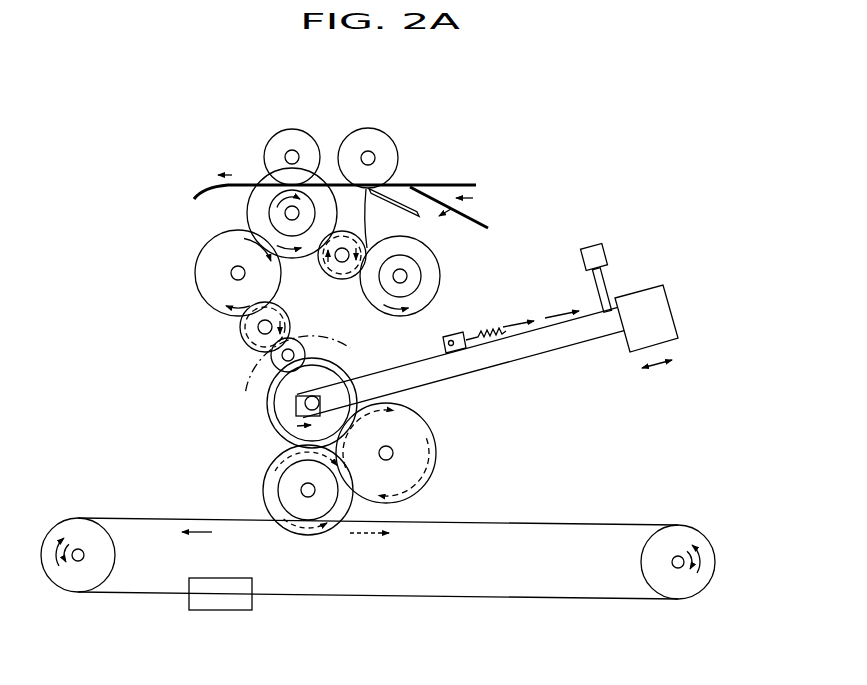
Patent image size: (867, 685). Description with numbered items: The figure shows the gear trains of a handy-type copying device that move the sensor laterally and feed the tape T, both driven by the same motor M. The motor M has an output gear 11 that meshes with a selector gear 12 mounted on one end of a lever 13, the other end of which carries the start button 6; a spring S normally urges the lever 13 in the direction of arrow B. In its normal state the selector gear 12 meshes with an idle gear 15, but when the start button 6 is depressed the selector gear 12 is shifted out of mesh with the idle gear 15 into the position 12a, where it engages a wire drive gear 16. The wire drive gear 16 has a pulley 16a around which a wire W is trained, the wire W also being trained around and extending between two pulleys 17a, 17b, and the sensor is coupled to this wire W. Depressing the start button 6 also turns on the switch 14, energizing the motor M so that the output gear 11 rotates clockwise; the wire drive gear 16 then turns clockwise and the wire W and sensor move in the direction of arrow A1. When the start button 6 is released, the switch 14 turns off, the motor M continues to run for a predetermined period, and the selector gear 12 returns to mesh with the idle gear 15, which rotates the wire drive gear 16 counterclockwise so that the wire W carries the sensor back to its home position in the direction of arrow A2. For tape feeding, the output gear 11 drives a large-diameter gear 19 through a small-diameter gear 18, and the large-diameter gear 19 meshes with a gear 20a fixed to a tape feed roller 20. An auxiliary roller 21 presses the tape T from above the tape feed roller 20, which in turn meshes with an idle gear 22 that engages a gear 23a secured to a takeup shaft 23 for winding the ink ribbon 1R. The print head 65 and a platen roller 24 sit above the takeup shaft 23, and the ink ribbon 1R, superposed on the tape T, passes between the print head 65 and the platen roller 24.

The start button 6 is at (657, 313).
The output gear 11 is at (271, 355).
The selector gear 12 is at (343, 380).
The position of the selector gear 12a is at (266, 418).
The lever 13 is at (530, 348).
The switch 14 is at (604, 252).
The idle gear 15 is at (424, 446).
The wire drive gear 16 is at (262, 490).
The pulley 16a is at (350, 507).
The pulley 17a is at (77, 579).
The pulley 17b is at (683, 586).
The small-diameter gear 18 is at (241, 326).
The large-diameter gear 19 is at (195, 272).
The tape feed roller 20 is at (275, 200).
The gear 20a is at (247, 217).
The auxiliary roller 21 is at (290, 130).
The idle gear 22 is at (341, 280).
The takeup shaft 23 is at (415, 270).
The gear 23a is at (428, 290).
The platen roller 24 is at (366, 129).
The print head 65 is at (421, 187).
The ink ribbon 1R is at (480, 220).
The tape T is at (198, 189).
The wire W is at (567, 522).
The motor M is at (245, 387).
The direction B is at (563, 315).
The spring S is at (505, 323).
The direction A1 is at (176, 577).
The direction A2 is at (316, 578).